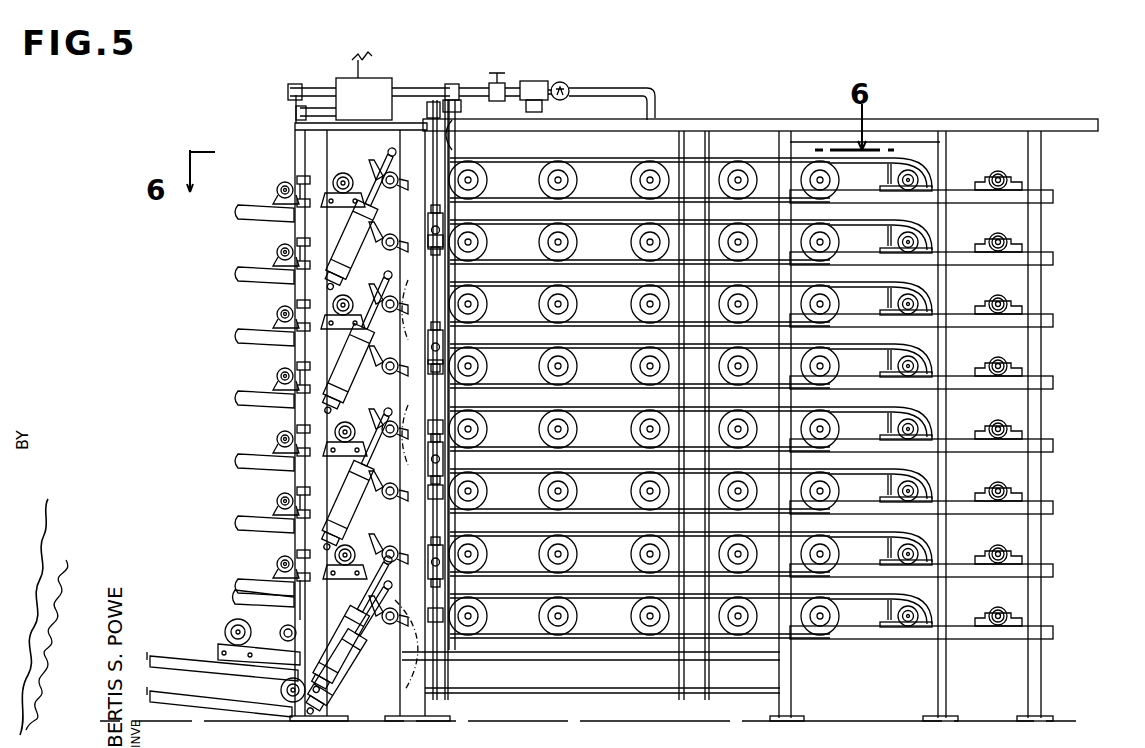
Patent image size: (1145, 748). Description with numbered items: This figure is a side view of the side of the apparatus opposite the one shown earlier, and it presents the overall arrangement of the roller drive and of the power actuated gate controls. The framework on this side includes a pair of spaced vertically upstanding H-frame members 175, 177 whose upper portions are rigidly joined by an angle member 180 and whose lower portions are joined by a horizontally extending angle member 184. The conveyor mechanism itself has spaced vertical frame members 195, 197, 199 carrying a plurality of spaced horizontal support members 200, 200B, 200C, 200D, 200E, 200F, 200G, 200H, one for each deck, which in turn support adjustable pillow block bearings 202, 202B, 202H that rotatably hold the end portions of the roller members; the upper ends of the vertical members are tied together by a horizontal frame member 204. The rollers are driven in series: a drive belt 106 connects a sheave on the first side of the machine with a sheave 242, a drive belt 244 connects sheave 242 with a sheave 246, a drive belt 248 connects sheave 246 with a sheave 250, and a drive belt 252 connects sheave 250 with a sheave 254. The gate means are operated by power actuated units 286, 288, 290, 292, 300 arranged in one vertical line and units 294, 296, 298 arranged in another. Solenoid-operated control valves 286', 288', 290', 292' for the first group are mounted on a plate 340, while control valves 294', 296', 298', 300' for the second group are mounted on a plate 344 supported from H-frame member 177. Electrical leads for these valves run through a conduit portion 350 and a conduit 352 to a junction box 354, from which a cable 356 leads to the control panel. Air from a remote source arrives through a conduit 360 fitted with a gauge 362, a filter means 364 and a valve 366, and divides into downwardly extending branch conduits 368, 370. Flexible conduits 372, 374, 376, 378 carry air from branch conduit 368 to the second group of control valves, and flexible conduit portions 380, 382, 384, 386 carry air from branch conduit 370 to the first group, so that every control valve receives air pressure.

The driving belt 106 is at (806, 204).
The H-frame member 175 is at (410, 150).
The H-frame member 177 is at (705, 150).
The angle member 180 is at (650, 121).
The horizontally extending angle member 184 is at (545, 688).
The vertical frame member 195 is at (790, 140).
The vertical frame member 197 is at (948, 132).
The vertical frame member 199 is at (1046, 126).
The horizontal support member 200 is at (1065, 199).
The horizontal support member 200B is at (1058, 258).
The horizontal support member 200C is at (1058, 318).
The horizontal support member 200D is at (1058, 379).
The horizontal support member 200E is at (1058, 439).
The horizontal support member 200F is at (1058, 501).
The horizontal support member 200G is at (1058, 566).
The horizontal support member 200H is at (1056, 630).
The pillow block bearing 202 is at (982, 172).
The pillow block bearing 202B is at (982, 234).
The pillow block bearing 202H is at (982, 612).
The horizontal frame member 204 is at (895, 130).
The sheave 242 is at (738, 164).
The drive belt 244 is at (663, 206).
The sheave 246 is at (654, 161).
The drive belt 248 is at (586, 160).
The sheave 250 is at (580, 200).
The drive belt 252 is at (640, 174).
The sheave 254 is at (489, 165).
The power actuated means 286 is at (361, 219).
The control valve 286' is at (272, 194).
The power actuated means 288 is at (358, 342).
The control valve 288' is at (256, 331).
The power actuated means 290 is at (365, 479).
The control valve 290' is at (269, 447).
The power actuated means 292 is at (352, 609).
The control valve 292' is at (272, 569).
The power actuated means 294 is at (415, 400).
The control valve 294' is at (480, 243).
The power actuated means 296 is at (397, 319).
The control valve 296' is at (483, 366).
The power actuated means 298 is at (397, 446).
The control valve 298' is at (482, 512).
The power actuated means 300 is at (358, 648).
The control valve 300' is at (481, 644).
The plate 340 is at (296, 136).
The plate 344 is at (456, 130).
The conduit portion 350 is at (295, 118).
The conduit 352 is at (457, 156).
The junction box 354 is at (385, 78).
The cable 356 is at (357, 74).
The conduit 360 is at (609, 86).
The gauge 362 is at (561, 82).
The filter means 364 is at (543, 108).
The valve 366 is at (495, 72).
The branch conduit 368 is at (434, 102).
The branch conduit 370 is at (290, 92).
The flexible conduit 372 is at (482, 305).
The flexible conduit 374 is at (482, 429).
The flexible conduit 376 is at (482, 493).
The flexible conduit 378 is at (481, 619).
The flexible conduit portion 380 is at (262, 258).
The flexible conduit portion 382 is at (262, 376).
The flexible conduit portion 384 is at (260, 498).
The flexible conduit portion 386 is at (251, 594).